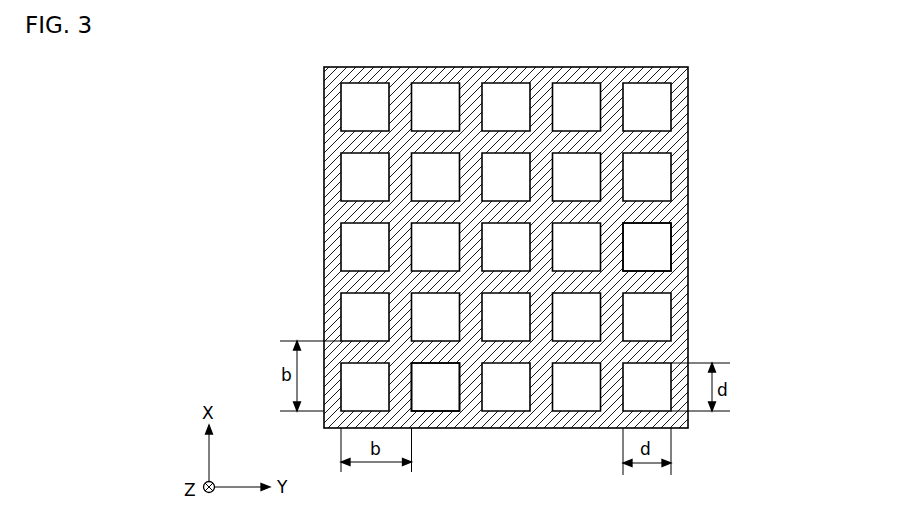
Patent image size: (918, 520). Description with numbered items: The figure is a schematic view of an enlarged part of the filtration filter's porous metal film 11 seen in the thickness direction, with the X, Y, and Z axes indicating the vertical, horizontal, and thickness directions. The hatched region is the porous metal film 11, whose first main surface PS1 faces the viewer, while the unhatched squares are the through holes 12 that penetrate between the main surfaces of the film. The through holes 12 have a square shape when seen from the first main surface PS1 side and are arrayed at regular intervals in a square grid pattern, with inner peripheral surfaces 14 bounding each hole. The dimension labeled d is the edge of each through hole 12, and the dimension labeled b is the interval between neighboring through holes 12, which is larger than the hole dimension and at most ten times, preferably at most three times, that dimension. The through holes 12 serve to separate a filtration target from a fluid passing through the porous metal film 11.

The porous metal film 11 is at (680, 213).
The through holes 12 is at (434, 388).
The inner peripheral surfaces 14 is at (645, 245).
The first main surface PS1 is at (676, 420).